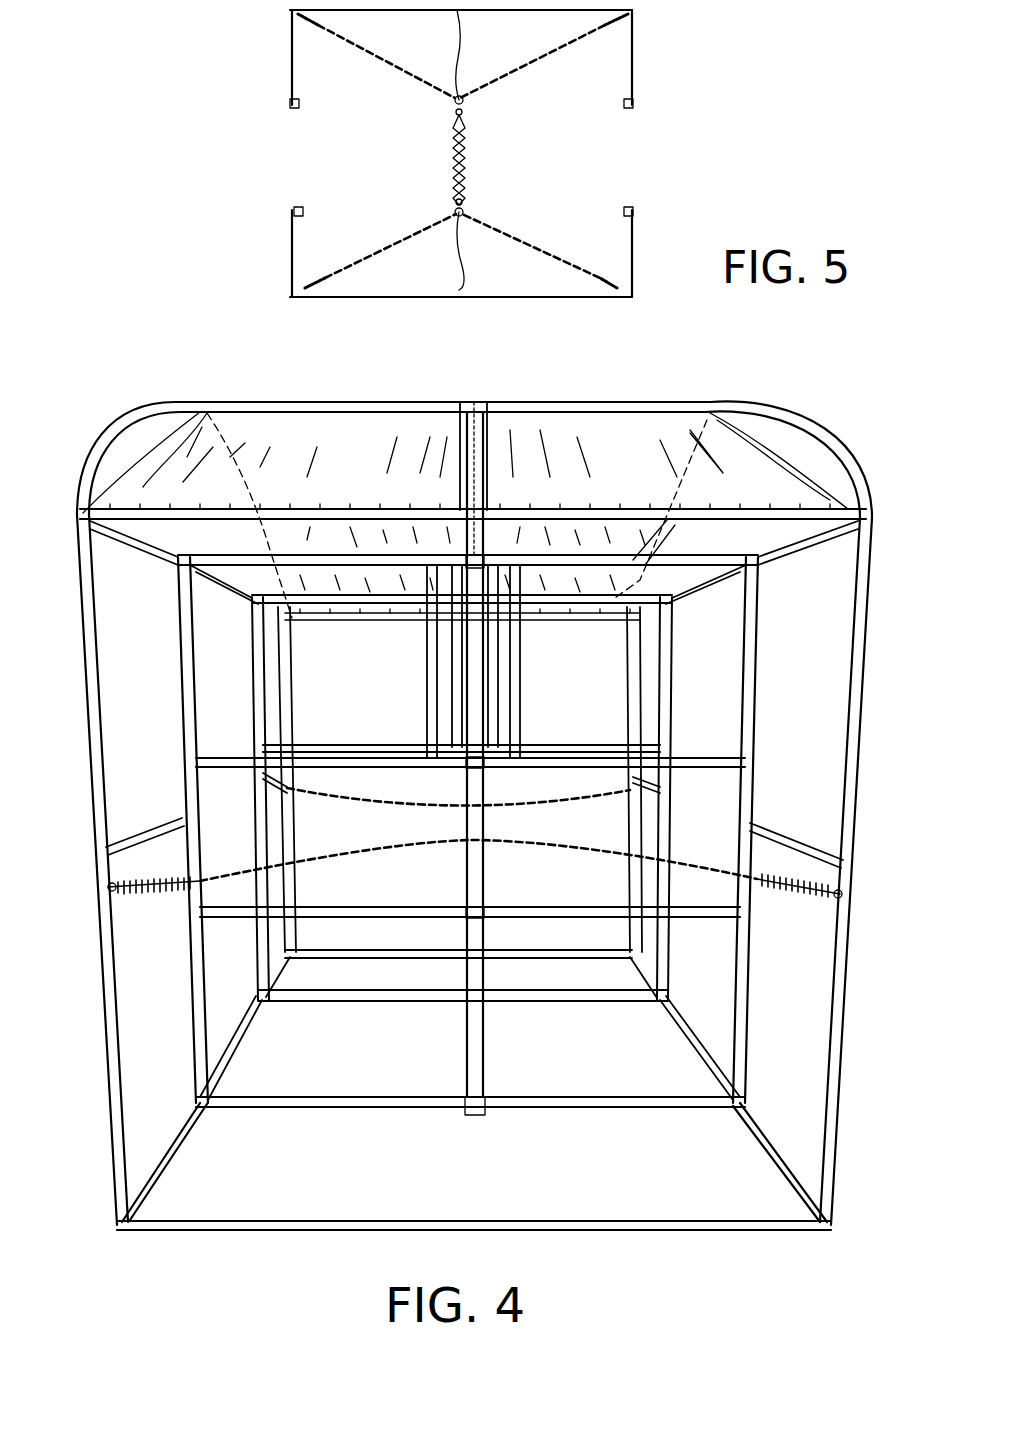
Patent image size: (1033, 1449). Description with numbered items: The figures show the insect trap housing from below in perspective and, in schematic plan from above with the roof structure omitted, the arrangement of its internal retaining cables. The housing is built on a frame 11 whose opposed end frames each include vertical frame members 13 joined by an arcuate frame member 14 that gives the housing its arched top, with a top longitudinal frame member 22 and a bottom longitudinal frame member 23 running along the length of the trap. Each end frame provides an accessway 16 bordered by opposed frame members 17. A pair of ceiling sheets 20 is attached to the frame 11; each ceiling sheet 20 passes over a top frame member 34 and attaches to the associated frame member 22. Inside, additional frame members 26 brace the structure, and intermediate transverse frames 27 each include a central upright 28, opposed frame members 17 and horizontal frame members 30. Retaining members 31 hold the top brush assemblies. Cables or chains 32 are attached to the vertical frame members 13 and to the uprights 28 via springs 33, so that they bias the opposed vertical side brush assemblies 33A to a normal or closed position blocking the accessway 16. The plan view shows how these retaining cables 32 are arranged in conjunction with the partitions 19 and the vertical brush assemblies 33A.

In FIG. 4, the frame 11 is at (118, 395).
In FIG. 4, the vertical frame members 13 is at (850, 640).
In FIG. 5, the arcuate frame member 14 is at (639, 62).
In FIG. 4, the arcuate frame member 14 is at (829, 430).
In FIG. 5, the accessway 16 is at (330, 153).
In FIG. 4, the opposed frame members 17 is at (176, 623).
In FIG. 5, the partition 19 is at (462, 48).
In FIG. 4, the partition 19 is at (473, 478).
In FIG. 4, the ceiling sheets 20 is at (362, 473).
In FIG. 5, the top longitudinal frame member 22 is at (612, 6).
In FIG. 4, the top longitudinal frame member 22 is at (800, 521).
In FIG. 4, the bottom longitudinal frame member 23 is at (625, 1220).
In FIG. 4, the additional frame members 26 is at (150, 832).
In FIG. 4, the intermediate transverse frames 27 is at (313, 1127).
In FIG. 4, the central upright 28 is at (480, 1040).
In FIG. 4, the horizontal frame members 30 is at (340, 744).
In FIG. 4, the retaining members 31 is at (428, 690).
In FIG. 5, the cables or chains 32 is at (373, 60).
In FIG. 4, the cables or chains 32 is at (540, 848).
In FIG. 5, the springs 33 is at (306, 27).
In FIG. 4, the springs 33 is at (782, 895).
In FIG. 5, the side brush assemblies 33A is at (468, 172).
In FIG. 4, the top frame member 34 is at (278, 400).